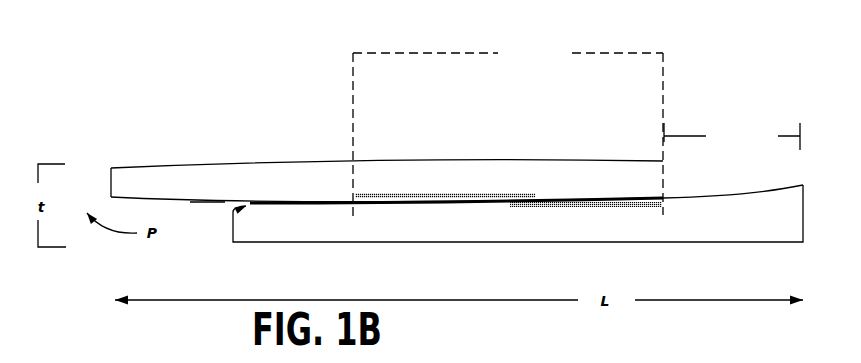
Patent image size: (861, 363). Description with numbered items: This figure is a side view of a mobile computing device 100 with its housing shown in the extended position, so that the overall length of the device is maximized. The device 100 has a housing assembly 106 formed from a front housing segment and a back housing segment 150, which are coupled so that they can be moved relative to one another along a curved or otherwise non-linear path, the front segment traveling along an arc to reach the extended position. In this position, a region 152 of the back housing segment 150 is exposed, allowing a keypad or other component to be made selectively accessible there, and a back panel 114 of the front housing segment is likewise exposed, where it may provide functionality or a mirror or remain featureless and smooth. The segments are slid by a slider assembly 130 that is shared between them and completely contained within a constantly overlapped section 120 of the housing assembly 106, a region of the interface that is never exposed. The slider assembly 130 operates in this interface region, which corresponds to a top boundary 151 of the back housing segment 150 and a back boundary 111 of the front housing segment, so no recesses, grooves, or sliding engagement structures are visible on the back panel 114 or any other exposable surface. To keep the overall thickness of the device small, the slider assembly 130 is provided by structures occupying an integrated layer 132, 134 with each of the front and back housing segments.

The device 100 is at (330, 112).
The housing assembly 106 is at (218, 163).
The back boundary 111 is at (270, 202).
The back panel 114 is at (208, 203).
The overlapped section 120 is at (508, 133).
The slider assembly 130 is at (507, 180).
The integrated layer 132 is at (453, 200).
The integrated layer 134 is at (657, 215).
The back housing segment 150 is at (470, 241).
The top boundary 151 is at (303, 203).
The exposed region 152 is at (732, 136).